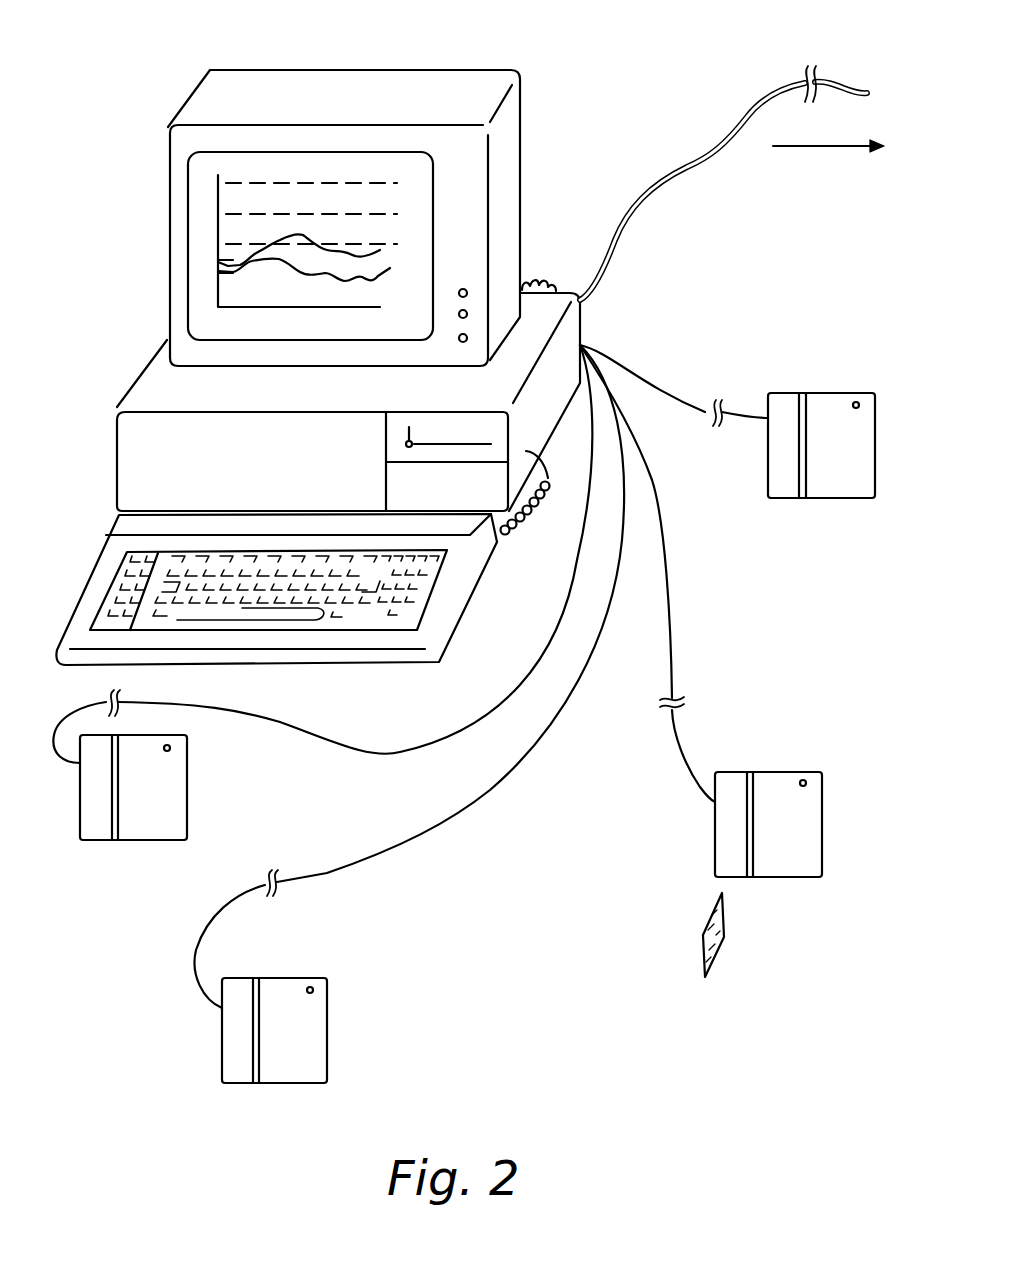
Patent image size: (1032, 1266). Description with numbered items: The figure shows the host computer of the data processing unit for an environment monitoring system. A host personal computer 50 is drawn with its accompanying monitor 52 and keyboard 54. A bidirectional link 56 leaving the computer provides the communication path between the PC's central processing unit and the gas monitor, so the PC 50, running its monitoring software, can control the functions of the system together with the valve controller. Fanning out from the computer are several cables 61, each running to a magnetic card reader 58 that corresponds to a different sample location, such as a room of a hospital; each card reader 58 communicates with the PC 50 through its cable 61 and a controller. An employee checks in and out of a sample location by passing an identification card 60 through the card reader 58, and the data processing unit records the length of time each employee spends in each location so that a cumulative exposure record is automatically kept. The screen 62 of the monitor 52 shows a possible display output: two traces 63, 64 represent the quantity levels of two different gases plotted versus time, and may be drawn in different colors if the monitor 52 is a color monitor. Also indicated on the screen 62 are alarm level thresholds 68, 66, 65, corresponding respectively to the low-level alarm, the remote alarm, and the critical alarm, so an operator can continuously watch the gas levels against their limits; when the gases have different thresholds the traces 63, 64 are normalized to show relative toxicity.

The host personal computer 50 is at (114, 453).
The monitor 52 is at (237, 83).
The keyboard 54 is at (108, 578).
The bidirectional link 56 is at (686, 167).
The magnetic card reader 58 is at (826, 500).
The identification card 60 is at (703, 937).
The cable 61 is at (647, 377).
The screen 62 is at (197, 187).
The trace 63 is at (232, 252).
The trace 64 is at (230, 286).
The critical alarm threshold 65 is at (293, 175).
The remote alarm threshold 66 is at (321, 207).
The low-level alarm threshold 68 is at (367, 237).